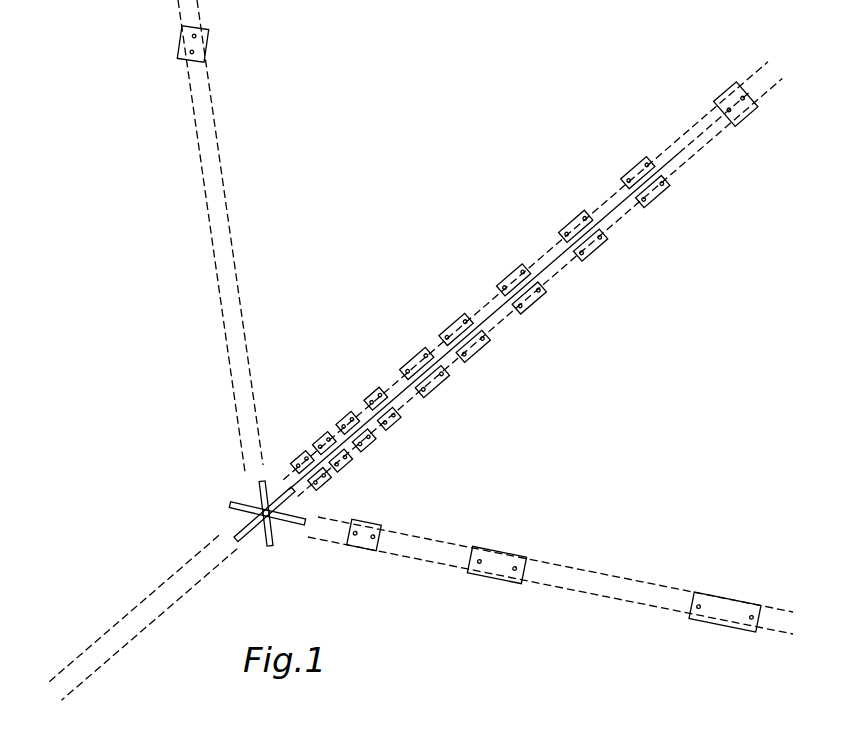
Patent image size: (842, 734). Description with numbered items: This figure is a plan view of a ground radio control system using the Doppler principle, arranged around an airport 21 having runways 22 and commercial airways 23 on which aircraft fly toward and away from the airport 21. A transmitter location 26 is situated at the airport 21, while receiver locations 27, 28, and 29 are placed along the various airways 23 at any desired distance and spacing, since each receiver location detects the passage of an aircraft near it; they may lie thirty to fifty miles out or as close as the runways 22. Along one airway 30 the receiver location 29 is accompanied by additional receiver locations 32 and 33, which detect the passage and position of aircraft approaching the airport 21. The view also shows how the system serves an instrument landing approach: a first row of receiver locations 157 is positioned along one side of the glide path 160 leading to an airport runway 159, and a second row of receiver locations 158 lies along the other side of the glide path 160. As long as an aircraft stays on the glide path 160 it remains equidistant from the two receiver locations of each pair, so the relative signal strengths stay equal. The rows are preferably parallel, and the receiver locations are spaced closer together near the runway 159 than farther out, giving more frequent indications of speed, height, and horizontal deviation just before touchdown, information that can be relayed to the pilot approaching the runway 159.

The airport 21 is at (223, 498).
The runways 22 is at (232, 512).
The commercial airways 23 is at (314, 455).
The transmitter location 26 is at (269, 517).
The receiver location 27 is at (210, 44).
The receiver location 28 is at (736, 122).
The receiver location 29 is at (723, 631).
The airway 30 is at (549, 560).
The receiver location 32 is at (491, 580).
The receiver location 33 is at (375, 552).
The first row of receiver locations 157 is at (358, 430).
The second row of receiver locations 158 is at (410, 415).
The airport runway 159 is at (290, 492).
The glide path 160 is at (446, 360).